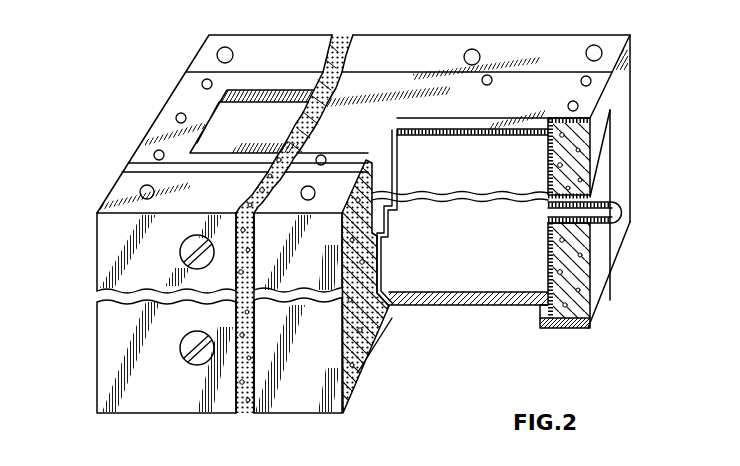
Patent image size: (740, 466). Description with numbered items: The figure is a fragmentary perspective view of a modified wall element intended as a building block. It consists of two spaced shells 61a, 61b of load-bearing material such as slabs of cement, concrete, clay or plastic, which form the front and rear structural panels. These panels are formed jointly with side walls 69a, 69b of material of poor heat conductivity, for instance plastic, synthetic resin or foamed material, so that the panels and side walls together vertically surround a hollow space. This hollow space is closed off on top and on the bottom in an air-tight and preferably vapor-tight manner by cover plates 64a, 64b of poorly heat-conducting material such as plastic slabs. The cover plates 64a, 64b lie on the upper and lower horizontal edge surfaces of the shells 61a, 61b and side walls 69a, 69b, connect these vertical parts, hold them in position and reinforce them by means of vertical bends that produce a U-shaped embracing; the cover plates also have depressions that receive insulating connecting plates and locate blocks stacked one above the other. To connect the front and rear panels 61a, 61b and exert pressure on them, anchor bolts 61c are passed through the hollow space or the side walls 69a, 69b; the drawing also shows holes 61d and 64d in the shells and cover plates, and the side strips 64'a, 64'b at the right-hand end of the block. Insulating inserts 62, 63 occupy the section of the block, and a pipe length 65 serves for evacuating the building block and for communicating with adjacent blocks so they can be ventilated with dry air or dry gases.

The shell 61a is at (284, 48).
The shell 61b is at (120, 360).
The anchor bolt 61c is at (185, 348).
The bolt hole 61d is at (593, 45).
The insulating insert 62 is at (545, 150).
The insulating insert 63 is at (307, 127).
The cover plate 64a is at (167, 145).
The cover plate 64b is at (477, 307).
The small hole 64d is at (573, 101).
The right side strip 64'a is at (641, 167).
The lower right side strip 64'b is at (619, 290).
The pipe length 65 is at (608, 217).
The side wall 69a is at (195, 107).
The side wall 69b is at (600, 197).